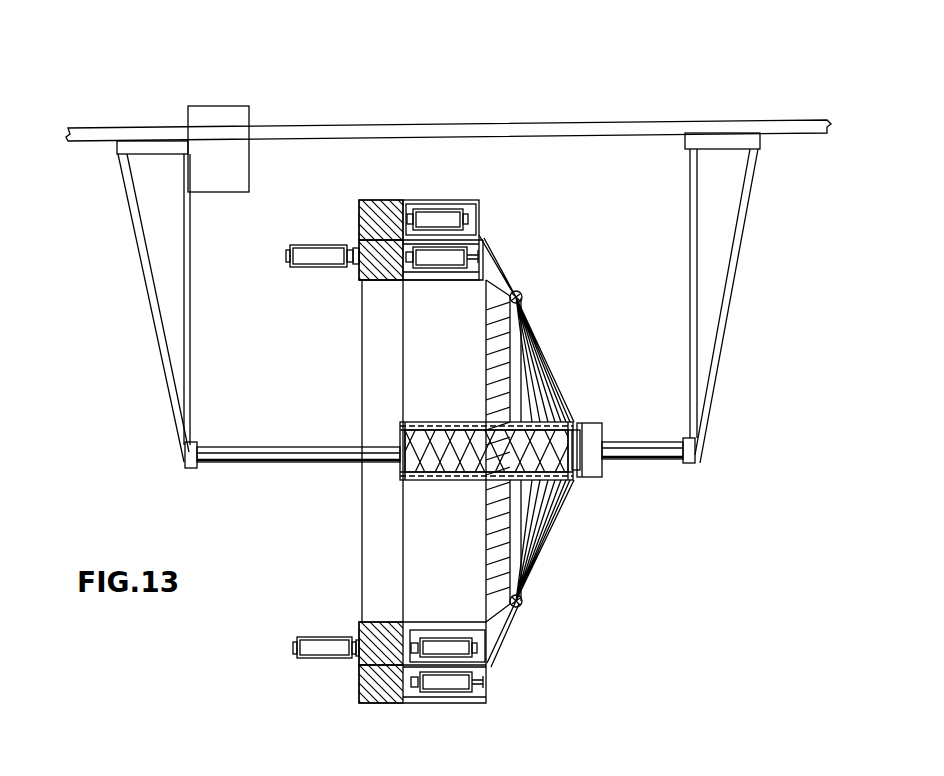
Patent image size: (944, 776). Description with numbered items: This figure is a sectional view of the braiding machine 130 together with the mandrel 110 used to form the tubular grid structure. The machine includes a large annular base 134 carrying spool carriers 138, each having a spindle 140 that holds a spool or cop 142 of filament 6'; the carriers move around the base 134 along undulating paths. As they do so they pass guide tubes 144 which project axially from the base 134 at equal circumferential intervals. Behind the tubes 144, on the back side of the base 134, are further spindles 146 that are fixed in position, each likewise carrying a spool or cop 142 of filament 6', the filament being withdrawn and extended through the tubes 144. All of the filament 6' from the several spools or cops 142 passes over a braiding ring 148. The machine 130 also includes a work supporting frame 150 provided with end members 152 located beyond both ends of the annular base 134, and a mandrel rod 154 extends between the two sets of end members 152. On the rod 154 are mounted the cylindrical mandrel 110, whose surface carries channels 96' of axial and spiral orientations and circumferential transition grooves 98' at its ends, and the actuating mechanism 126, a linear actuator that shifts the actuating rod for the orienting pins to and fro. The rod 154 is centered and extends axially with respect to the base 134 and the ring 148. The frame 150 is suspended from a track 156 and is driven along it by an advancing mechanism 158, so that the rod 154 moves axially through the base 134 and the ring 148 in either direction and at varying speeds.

The filament 6' is at (518, 441).
The channels 96' is at (448, 504).
The transition grooves 98' is at (472, 501).
The mandrel 110 is at (445, 447).
The actuating mechanism 126 is at (593, 420).
The braiding machine 130 is at (522, 172).
The annular base 134 is at (372, 688).
The spool carrier 138 is at (405, 226).
The spindle 140 is at (410, 226).
The spool or cop 142 is at (445, 215).
The guide tubes 144 is at (436, 648).
The spindles 146 is at (352, 262).
The braiding ring 148 is at (521, 292).
The work supporting frame 150 is at (740, 252).
The end members 152 is at (184, 293).
The mandrel rod 154 is at (268, 463).
The track 156 is at (390, 128).
The advancing mechanism 158 is at (212, 113).